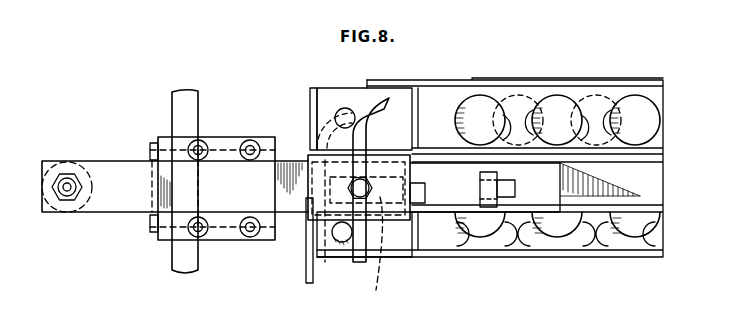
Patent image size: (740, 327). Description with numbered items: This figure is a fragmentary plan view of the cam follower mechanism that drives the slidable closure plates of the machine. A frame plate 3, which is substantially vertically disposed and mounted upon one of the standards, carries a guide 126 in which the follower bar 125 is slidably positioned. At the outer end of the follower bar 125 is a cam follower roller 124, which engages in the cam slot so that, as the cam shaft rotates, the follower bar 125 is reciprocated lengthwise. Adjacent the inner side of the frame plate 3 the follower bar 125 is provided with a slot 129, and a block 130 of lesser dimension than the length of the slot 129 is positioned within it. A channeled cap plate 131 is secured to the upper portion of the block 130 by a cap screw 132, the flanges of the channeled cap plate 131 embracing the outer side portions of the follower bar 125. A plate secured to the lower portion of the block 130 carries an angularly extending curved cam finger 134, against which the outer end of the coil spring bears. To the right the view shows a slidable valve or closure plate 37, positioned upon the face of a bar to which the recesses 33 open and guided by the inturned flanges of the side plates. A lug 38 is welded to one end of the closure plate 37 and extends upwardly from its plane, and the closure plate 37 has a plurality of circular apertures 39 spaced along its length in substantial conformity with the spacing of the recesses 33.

The frame plate 3 is at (184, 105).
The recesses 33 is at (500, 120).
The slidable valve or closure plate 37 is at (425, 100).
The lug 38 is at (312, 105).
The circular apertures 39 is at (566, 103).
The cam follower roller 124 is at (85, 161).
The follower bar 125 is at (122, 161).
The guide 126 is at (228, 139).
The slot 129 is at (420, 191).
The block 130 is at (506, 233).
The channeled cap plate 131 is at (313, 275).
The cap screw 132 is at (362, 196).
The curved cam finger 134 is at (362, 106).